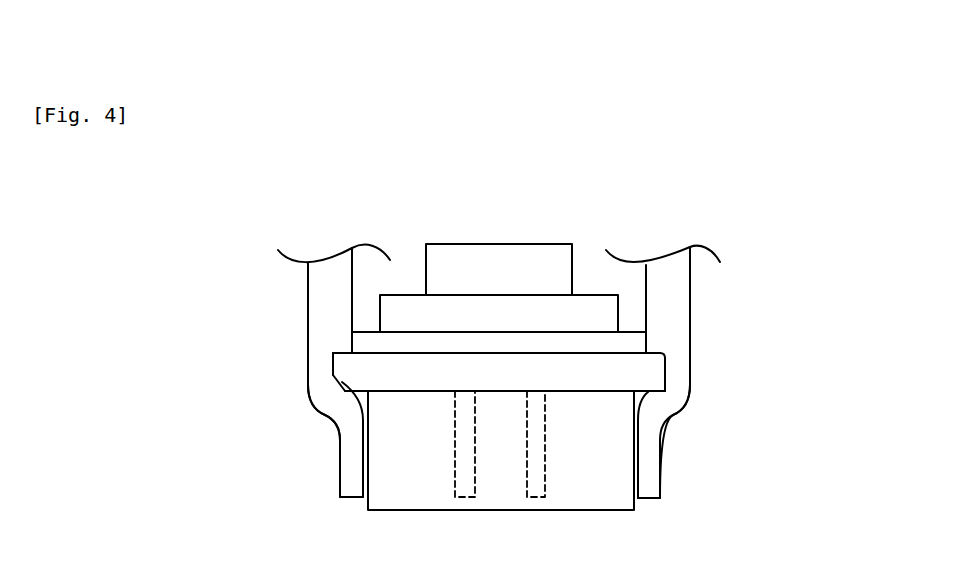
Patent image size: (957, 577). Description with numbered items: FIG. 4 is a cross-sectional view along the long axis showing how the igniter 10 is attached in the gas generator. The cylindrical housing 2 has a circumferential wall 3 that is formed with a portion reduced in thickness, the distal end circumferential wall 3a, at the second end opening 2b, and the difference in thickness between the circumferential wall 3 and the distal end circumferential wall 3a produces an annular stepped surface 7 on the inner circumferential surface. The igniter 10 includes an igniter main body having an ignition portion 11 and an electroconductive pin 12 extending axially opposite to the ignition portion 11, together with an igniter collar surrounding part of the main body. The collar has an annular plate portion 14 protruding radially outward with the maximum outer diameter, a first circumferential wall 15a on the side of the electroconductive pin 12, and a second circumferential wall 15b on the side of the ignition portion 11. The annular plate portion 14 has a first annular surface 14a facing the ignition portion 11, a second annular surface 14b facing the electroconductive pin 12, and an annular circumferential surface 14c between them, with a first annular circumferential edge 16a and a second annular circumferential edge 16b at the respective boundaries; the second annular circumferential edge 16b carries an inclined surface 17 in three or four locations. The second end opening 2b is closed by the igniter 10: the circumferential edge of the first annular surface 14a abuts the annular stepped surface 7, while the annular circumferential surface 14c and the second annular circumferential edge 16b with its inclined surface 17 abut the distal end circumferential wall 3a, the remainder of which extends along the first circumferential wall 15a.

The cylindrical housing 2 is at (300, 295).
The second end opening 2b is at (365, 498).
The circumferential wall 3 is at (675, 308).
The distal end circumferential wall 3a is at (648, 462).
The annular stepped surface 7 is at (666, 366).
The igniter 10 is at (443, 222).
The ignition portion 11 is at (522, 242).
The electroconductive pin 12 is at (465, 480).
The annular plate portion 14 is at (403, 385).
The first annular surface 14a is at (350, 350).
The second annular surface 14b is at (553, 392).
The annular circumferential surface 14c is at (333, 367).
The first circumferential wall 15a is at (593, 495).
The second circumferential wall 15b is at (560, 345).
The first annular circumferential edge 16a is at (667, 352).
The second annular circumferential edge 16b is at (667, 392).
The inclined surface 17 is at (340, 387).